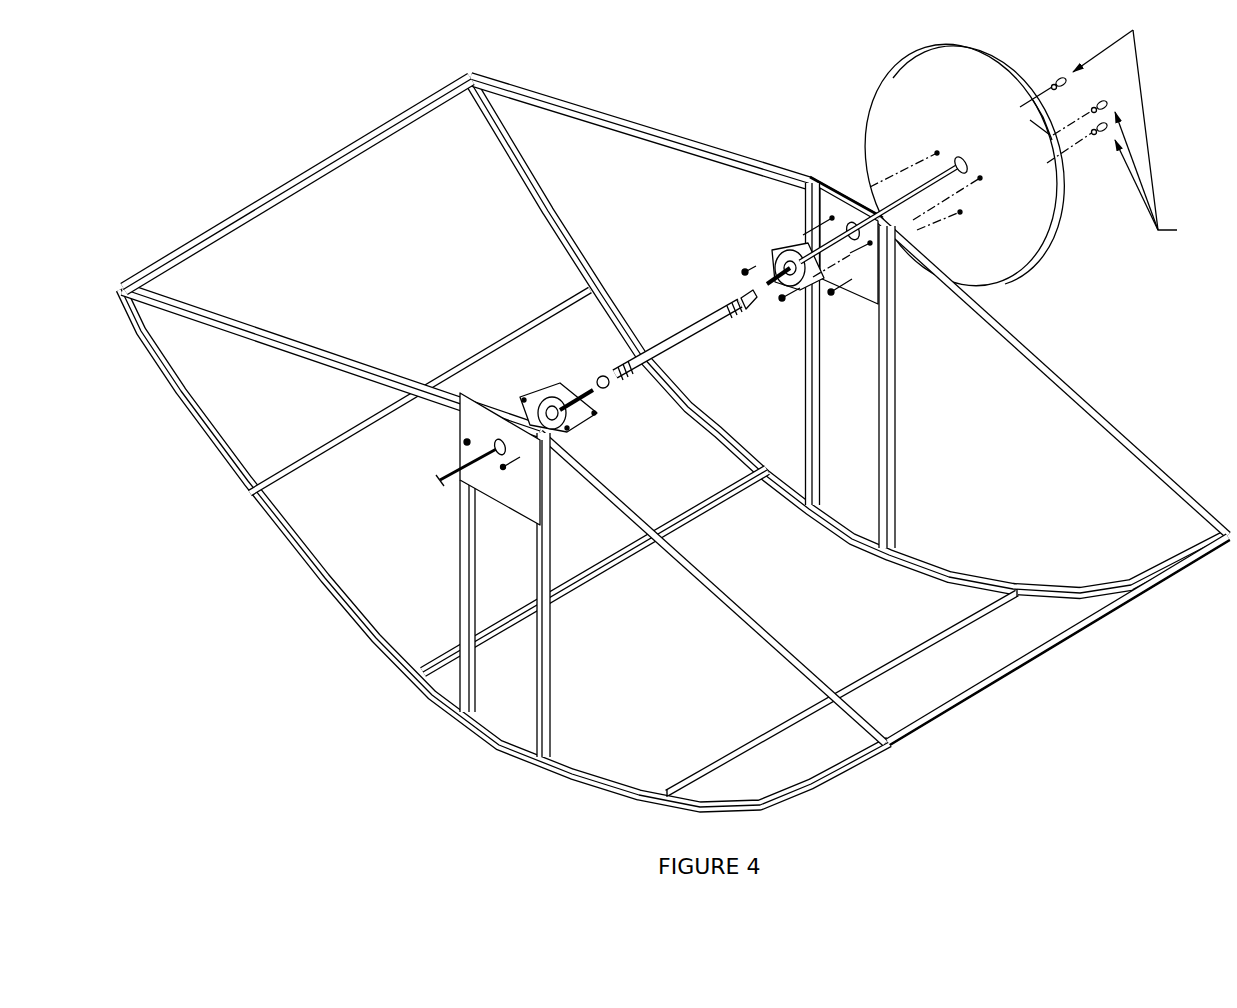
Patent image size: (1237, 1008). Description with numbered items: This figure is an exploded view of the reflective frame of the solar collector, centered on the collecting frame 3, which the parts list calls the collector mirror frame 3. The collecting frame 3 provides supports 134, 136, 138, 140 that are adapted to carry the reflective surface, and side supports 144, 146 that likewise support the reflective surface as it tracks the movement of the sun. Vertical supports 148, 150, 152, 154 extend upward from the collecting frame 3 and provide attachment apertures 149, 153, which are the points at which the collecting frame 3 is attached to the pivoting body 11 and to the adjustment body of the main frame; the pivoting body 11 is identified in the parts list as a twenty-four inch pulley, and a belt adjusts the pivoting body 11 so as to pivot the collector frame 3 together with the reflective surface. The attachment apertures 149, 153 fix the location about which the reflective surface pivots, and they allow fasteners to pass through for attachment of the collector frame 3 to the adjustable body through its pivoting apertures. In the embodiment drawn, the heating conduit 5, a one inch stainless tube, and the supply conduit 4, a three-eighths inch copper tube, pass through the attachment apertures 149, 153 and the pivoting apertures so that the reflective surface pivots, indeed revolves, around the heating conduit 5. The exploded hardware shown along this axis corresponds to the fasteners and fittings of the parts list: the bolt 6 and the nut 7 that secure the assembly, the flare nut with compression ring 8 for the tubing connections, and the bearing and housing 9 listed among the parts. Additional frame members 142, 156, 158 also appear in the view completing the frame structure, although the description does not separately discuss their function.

The collecting frame 3 is at (150, 268).
The supply conduit 4 is at (440, 463).
The heating conduit 5 is at (687, 327).
The bolt 6 is at (483, 227).
The nut 7 is at (468, 440).
The flare nut with compression ring 8 is at (748, 305).
The bearing and housing 9 is at (523, 390).
The pivoting body 11 is at (867, 117).
The support 134 is at (215, 235).
The support 136 is at (300, 457).
The support 138 is at (445, 663).
The support 140 is at (717, 760).
The bottom front rail 142 is at (1087, 627).
The side support 144 is at (310, 590).
The side support 146 is at (917, 552).
The vertical support 148 is at (897, 363).
The attachment aperture 149 is at (849, 227).
The vertical support 150 is at (807, 388).
The vertical support 152 is at (550, 653).
The attachment aperture 153 is at (467, 441).
The vertical support 154 is at (457, 507).
The front side rail 156 is at (760, 620).
The rear side rail 158 is at (1113, 417).